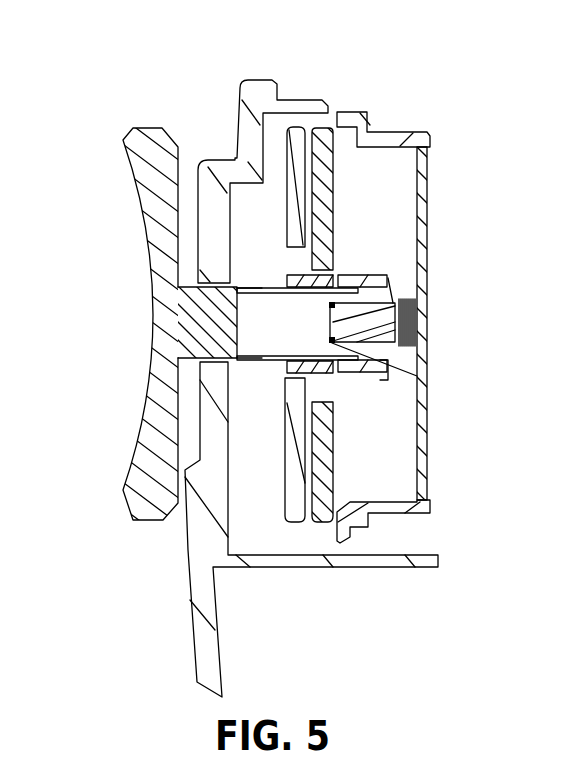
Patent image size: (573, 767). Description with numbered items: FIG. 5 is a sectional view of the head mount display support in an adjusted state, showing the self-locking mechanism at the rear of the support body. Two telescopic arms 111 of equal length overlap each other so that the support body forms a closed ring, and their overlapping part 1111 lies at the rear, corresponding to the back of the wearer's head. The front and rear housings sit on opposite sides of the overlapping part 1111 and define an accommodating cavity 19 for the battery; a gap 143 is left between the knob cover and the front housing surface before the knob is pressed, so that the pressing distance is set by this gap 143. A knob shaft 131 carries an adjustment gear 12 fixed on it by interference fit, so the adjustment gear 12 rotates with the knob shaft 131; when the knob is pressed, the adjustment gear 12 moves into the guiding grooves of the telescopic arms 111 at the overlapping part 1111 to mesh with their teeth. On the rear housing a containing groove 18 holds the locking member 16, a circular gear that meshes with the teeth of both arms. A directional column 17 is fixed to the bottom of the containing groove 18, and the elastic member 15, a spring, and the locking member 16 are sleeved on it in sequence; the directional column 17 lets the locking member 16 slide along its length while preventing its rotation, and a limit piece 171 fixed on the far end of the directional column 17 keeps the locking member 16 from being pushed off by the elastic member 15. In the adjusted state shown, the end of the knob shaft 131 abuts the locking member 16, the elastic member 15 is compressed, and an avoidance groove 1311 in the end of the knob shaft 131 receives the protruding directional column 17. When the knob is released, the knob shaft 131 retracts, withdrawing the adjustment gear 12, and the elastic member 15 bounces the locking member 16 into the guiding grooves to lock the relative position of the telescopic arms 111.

The adjustment gear 12 is at (295, 267).
The knob shaft 131 is at (220, 303).
The avoidance groove 1311 is at (280, 332).
The accommodating cavity 19 is at (278, 147).
The gap 143 is at (182, 503).
The telescopic arms 111 is at (325, 152).
The overlapping part 1111 is at (313, 252).
The containing groove 18 is at (380, 257).
The locking member 16 is at (385, 278).
The directional column 17 is at (417, 340).
The elastic member 15 is at (417, 313).
The limit piece 171 is at (387, 367).